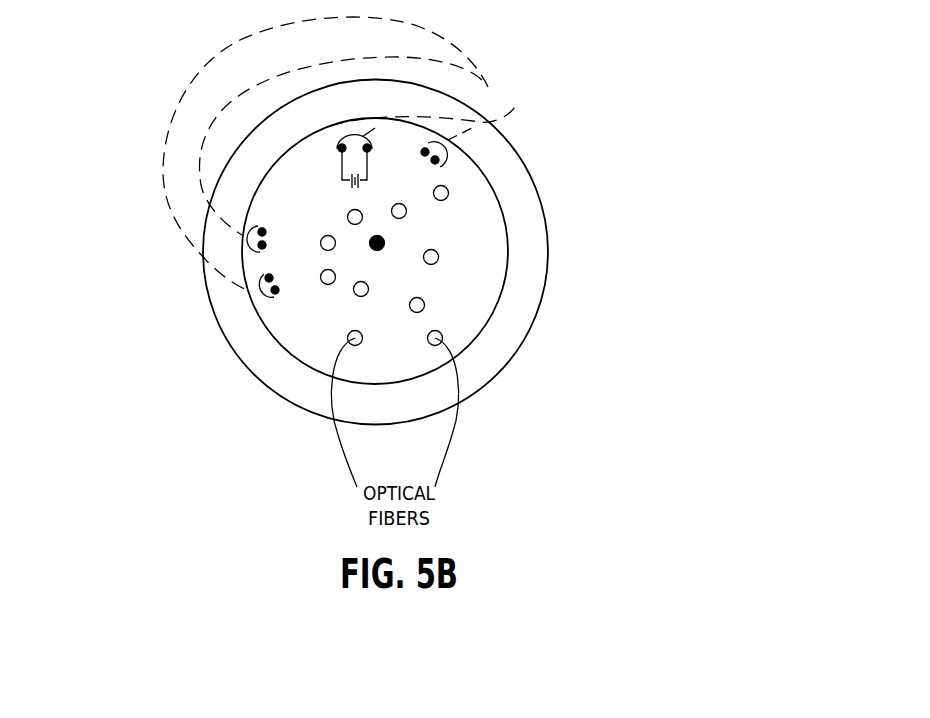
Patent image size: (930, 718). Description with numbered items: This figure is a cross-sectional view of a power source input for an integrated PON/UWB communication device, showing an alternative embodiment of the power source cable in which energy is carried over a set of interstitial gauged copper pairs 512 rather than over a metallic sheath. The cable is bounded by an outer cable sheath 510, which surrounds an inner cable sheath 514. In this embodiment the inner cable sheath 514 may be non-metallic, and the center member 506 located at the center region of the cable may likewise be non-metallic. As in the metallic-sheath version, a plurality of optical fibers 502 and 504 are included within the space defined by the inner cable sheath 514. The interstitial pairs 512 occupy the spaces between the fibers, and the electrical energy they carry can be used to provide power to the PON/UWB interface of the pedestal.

The optical fiber 502 is at (341, 452).
The optical fiber 504 is at (450, 452).
The center member 506 is at (385, 241).
The outer cable sheath 510 is at (550, 300).
The interstitial gauged copper pairs 512 is at (415, 157).
The inner cable sheath 514 is at (270, 345).